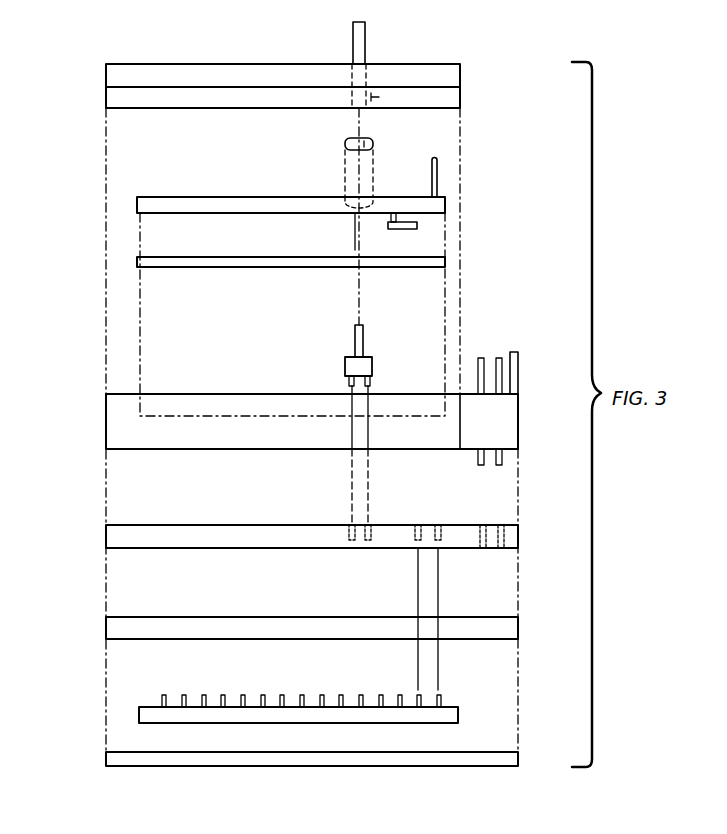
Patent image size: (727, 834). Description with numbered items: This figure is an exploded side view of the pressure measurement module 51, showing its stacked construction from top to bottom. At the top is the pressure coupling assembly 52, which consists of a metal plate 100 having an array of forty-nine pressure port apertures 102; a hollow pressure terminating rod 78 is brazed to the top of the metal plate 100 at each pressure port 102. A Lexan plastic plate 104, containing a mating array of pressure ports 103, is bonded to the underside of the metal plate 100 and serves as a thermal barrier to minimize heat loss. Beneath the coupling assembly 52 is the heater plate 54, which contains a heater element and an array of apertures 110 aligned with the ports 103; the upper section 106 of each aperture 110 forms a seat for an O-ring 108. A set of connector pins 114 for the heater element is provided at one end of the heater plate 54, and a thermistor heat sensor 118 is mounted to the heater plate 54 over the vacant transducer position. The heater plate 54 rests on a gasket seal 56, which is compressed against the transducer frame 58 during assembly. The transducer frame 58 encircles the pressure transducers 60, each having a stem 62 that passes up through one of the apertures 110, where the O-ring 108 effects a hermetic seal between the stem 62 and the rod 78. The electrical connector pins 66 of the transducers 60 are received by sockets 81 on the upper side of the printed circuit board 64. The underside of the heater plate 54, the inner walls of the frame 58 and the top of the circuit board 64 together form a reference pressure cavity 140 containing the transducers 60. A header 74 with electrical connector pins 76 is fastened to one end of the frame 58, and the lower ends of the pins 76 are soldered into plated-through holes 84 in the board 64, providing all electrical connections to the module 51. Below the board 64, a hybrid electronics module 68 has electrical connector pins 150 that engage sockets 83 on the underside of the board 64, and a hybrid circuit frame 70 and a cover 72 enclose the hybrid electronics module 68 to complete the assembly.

The pressure measurement module 51 is at (68, 512).
The pressure coupling assembly 52 is at (98, 63).
The heater plate 54 is at (188, 197).
The gasket seal 56 is at (196, 257).
The transducer frame 58 is at (208, 448).
The pressure transducer 60 is at (343, 345).
The stem 62 is at (354, 333).
The printed circuit board 64 is at (259, 525).
The electrical connector pins 66 is at (374, 380).
The hybrid electronics module 68 is at (228, 722).
The hybrid circuit frame 70 is at (216, 617).
The cover 72 is at (355, 752).
The printed circuit board header 74 is at (500, 414).
The electrical connector pins 76 is at (482, 362).
The hollow pressure terminating rod 78 is at (366, 26).
The sockets 81 is at (348, 527).
The sockets 83 is at (440, 532).
The plated-through holes 84 is at (518, 527).
The metal plate 100 is at (146, 54).
The pressure port aperture 102 is at (350, 70).
The mating pressure port 103 is at (380, 102).
The plastic plate 104 is at (216, 98).
The upper section 106 is at (338, 200).
The O-ring 108 is at (343, 144).
The aperture 110 is at (348, 219).
The connector pins 114 is at (438, 162).
The thermistor heat sensor 118 is at (418, 225).
The reference pressure cavity 140 is at (173, 412).
The electrical connector pins 150 is at (324, 694).